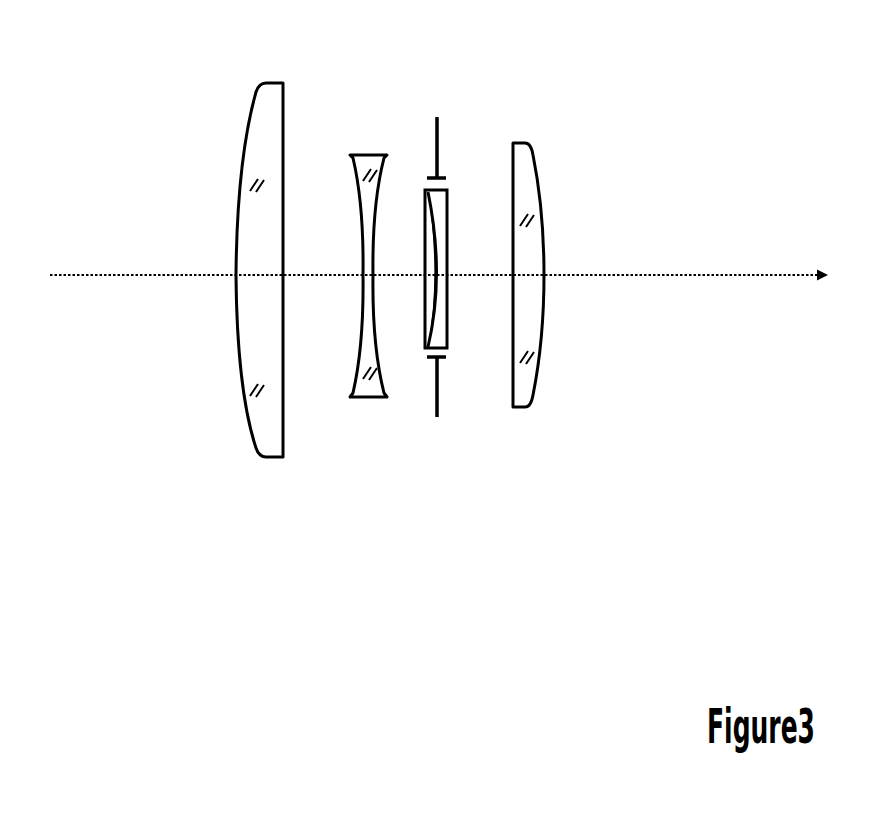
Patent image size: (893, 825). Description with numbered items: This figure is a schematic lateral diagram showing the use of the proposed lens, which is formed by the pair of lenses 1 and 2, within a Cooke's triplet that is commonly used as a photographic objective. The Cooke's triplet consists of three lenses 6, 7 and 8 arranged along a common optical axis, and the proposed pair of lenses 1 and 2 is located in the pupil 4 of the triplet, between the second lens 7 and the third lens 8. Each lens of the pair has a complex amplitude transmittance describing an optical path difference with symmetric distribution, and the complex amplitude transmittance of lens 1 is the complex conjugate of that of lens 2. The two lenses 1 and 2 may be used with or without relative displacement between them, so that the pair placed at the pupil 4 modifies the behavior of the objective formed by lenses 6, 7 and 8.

The lens 1 is at (415, 214).
The lens 2 is at (460, 217).
The pupil 4 is at (448, 394).
The lens of Cooke's triplet 6 is at (244, 406).
The lens of Cooke's triplet 7 is at (373, 405).
The lens of Cooke's triplet 8 is at (552, 361).